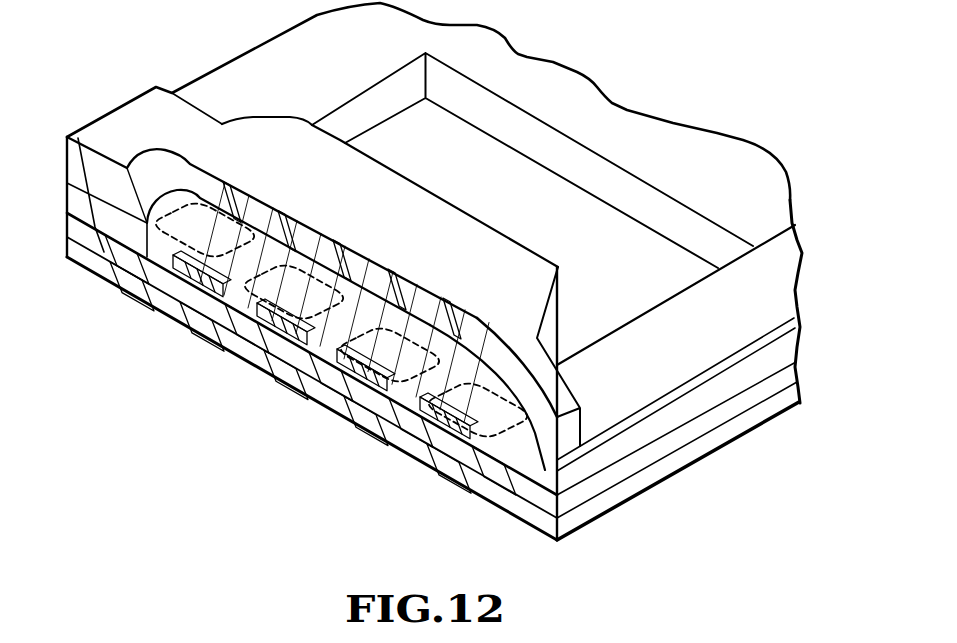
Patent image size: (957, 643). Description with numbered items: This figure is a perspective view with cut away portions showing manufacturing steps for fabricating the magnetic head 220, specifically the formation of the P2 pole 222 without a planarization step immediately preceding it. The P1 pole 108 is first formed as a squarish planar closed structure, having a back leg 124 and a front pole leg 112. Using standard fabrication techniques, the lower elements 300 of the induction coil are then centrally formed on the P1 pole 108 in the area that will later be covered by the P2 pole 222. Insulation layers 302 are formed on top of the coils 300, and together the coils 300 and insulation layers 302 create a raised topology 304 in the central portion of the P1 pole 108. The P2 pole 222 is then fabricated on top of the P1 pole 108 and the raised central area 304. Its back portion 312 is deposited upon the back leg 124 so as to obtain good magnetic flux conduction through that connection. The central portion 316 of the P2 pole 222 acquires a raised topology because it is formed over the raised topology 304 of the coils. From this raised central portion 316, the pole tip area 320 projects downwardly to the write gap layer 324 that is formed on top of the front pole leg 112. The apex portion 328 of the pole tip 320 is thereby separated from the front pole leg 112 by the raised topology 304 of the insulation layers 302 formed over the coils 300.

The P1 pole 108 is at (567, 77).
The front pole leg 112 is at (497, 480).
The back leg 124 is at (257, 70).
The magnetic head 220 is at (672, 43).
The P2 pole 222 is at (475, 235).
The lower elements of the induction coil 300 is at (195, 303).
The insulation layers 302 is at (230, 335).
The raised topology 304 is at (307, 285).
The back portion 312 is at (123, 117).
The central portion 316 is at (326, 282).
The pole tip area 320 is at (555, 386).
The write gap layer 324 is at (623, 423).
The apex portion 328 is at (531, 398).